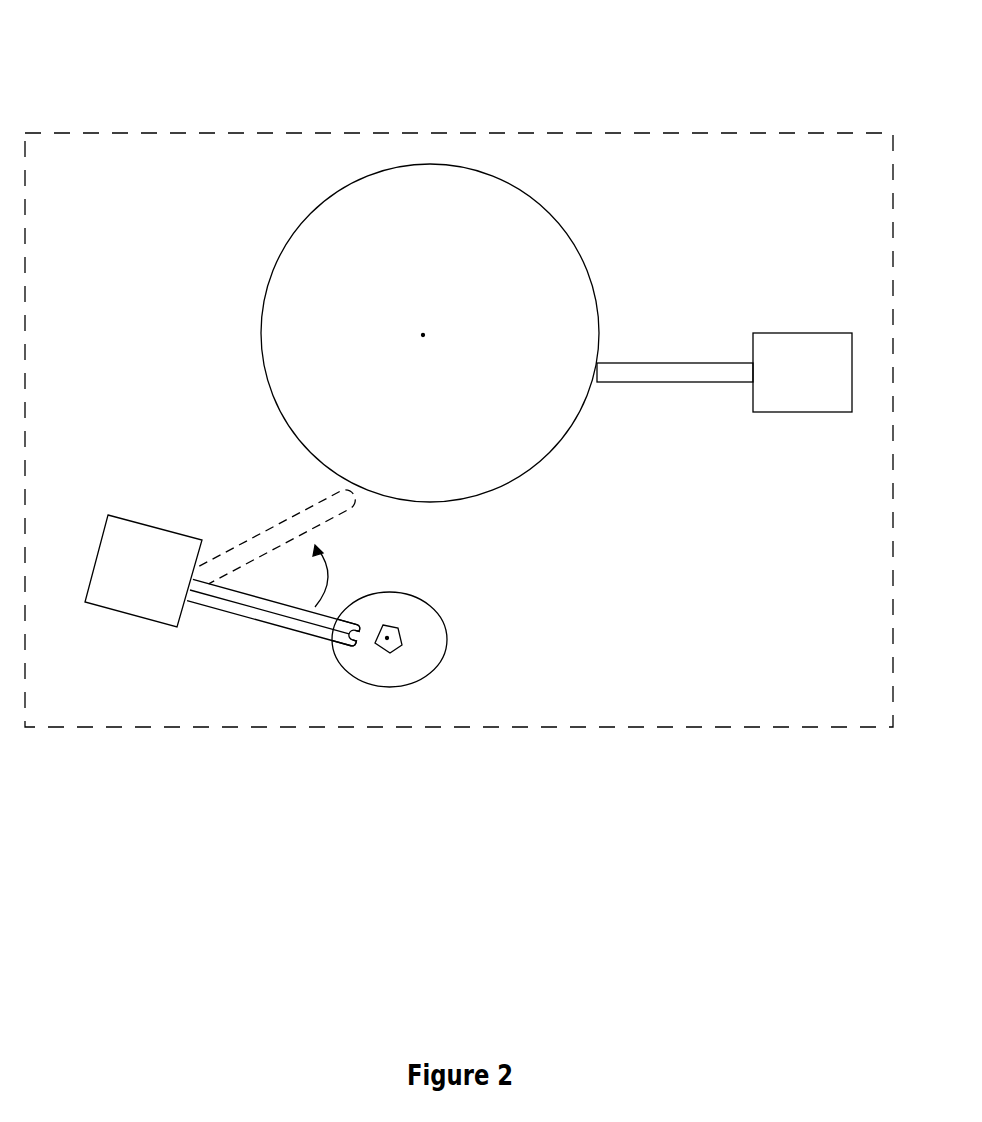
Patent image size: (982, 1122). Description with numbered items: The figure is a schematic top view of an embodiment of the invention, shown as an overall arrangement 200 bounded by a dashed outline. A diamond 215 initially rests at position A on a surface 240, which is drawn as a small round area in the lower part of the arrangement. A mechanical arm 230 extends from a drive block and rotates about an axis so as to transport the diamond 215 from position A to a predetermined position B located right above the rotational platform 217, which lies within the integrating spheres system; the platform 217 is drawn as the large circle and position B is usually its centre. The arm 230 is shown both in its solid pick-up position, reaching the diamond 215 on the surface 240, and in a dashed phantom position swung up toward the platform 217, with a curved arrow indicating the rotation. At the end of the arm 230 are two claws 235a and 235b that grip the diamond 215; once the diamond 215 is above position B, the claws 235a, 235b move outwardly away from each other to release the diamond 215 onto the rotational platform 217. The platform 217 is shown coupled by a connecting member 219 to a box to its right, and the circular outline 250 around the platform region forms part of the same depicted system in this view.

The processing system 200 is at (124, 96).
The rotational platform 217 is at (513, 290).
The platen 250 is at (262, 333).
The platen drive arm 219 is at (618, 382).
The mechanical arm 230 is at (235, 617).
The claw 235a is at (333, 643).
The claw 235b is at (358, 620).
The diamond 215 is at (398, 630).
The surface 240 is at (443, 660).